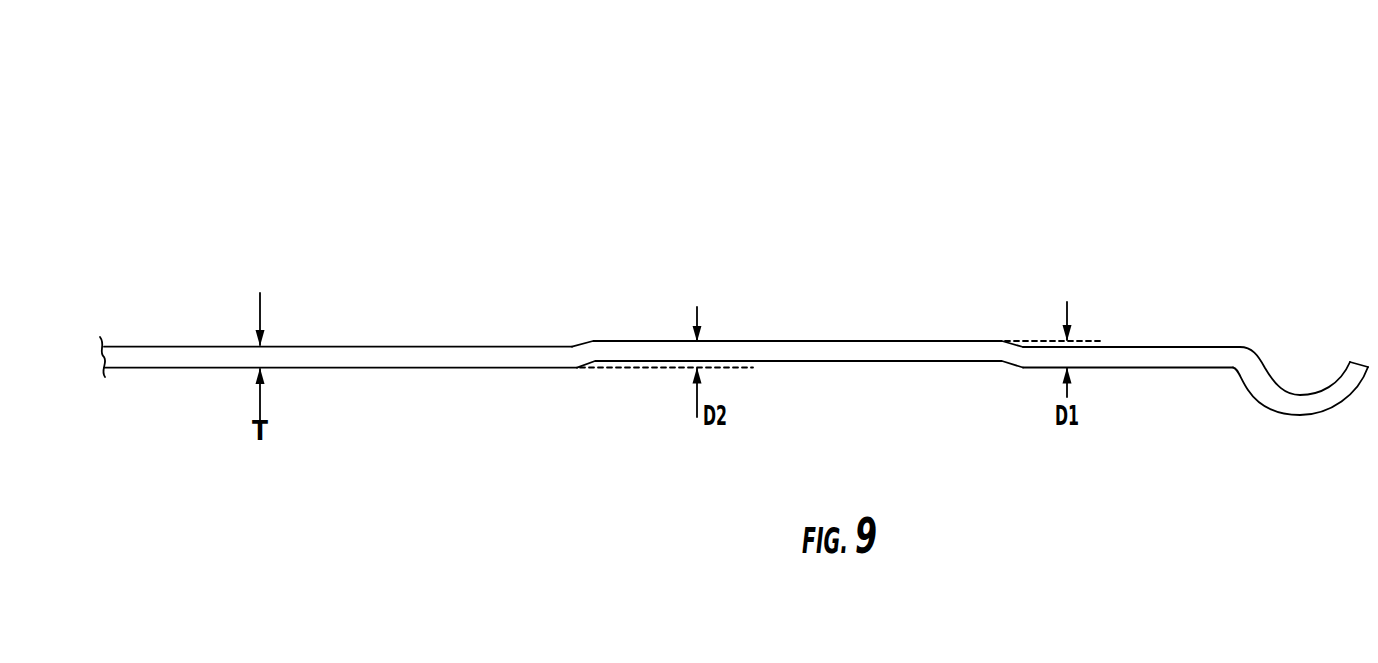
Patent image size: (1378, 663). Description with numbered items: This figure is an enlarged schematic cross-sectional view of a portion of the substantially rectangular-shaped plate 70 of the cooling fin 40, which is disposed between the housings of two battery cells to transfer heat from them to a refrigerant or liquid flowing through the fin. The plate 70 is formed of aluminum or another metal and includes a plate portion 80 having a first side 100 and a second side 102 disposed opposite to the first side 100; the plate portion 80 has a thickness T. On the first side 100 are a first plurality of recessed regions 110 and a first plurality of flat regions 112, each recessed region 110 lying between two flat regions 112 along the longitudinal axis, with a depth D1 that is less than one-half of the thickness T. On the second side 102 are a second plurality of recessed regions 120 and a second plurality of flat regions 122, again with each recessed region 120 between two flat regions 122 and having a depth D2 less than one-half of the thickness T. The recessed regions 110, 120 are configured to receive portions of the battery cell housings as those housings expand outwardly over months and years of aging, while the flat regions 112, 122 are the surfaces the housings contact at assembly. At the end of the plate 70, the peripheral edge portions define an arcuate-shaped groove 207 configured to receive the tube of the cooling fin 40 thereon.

The cooling fin 40 is at (1126, 188).
The substantially rectangular-shaped plate 70 is at (1120, 100).
The plate portion 80 is at (1227, 348).
The first side 100 is at (359, 346).
The second side 102 is at (358, 369).
The first plurality of recessed regions 110 is at (505, 346).
The first plurality of flat regions 112 is at (904, 341).
The second plurality of recessed regions 120 is at (902, 362).
The second plurality of flat regions 122 is at (504, 369).
The arcuate-shaped groove 207 is at (1291, 388).